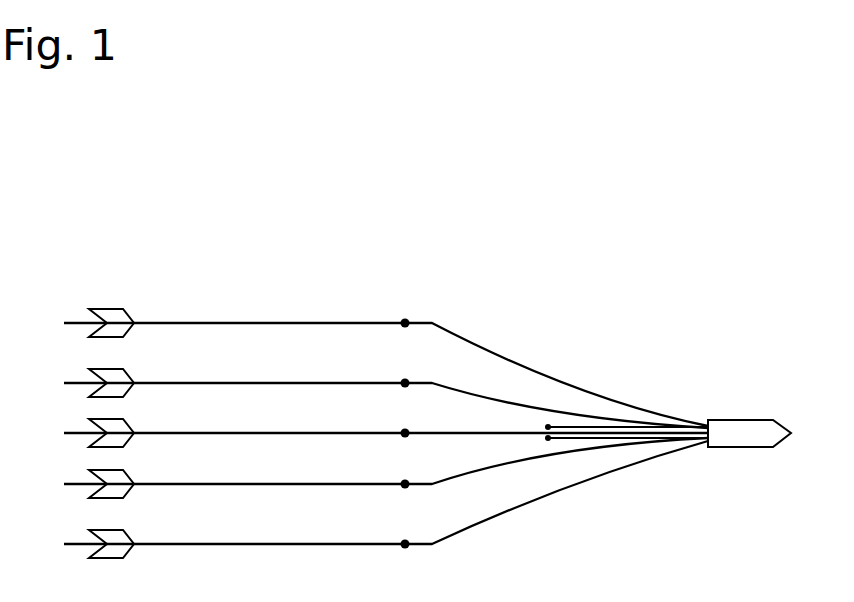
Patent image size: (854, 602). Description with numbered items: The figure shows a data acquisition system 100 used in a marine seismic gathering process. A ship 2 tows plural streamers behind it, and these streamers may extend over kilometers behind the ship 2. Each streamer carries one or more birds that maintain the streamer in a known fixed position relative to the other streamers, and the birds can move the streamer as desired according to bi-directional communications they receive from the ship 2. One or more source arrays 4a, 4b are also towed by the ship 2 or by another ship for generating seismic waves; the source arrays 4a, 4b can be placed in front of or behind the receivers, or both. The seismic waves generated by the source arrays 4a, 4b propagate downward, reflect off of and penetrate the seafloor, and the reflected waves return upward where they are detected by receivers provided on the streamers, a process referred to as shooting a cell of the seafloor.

The optical system 100 is at (240, 224).
The source array 4a is at (548, 427).
The source array 4b is at (548, 438).
The ship 2 is at (747, 419).